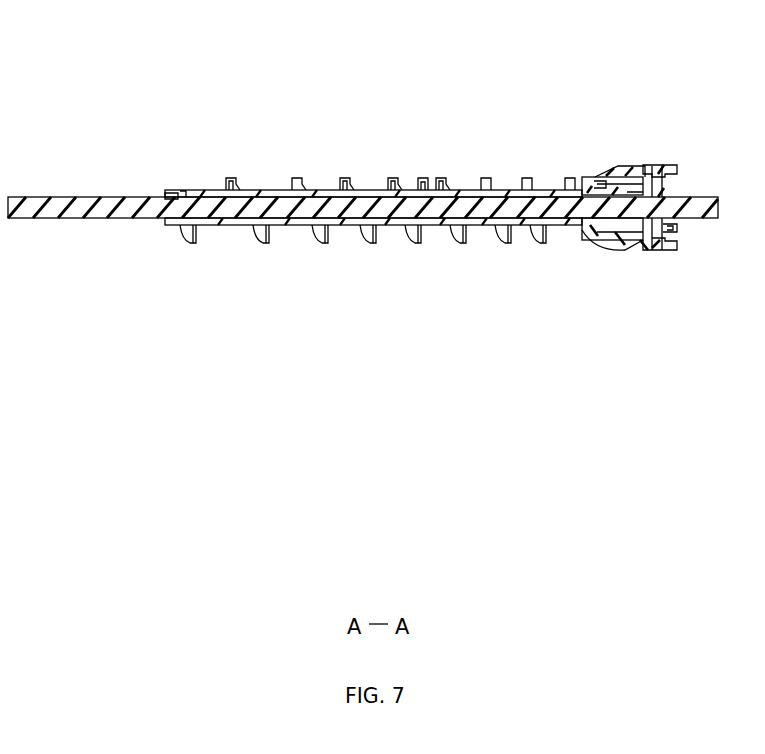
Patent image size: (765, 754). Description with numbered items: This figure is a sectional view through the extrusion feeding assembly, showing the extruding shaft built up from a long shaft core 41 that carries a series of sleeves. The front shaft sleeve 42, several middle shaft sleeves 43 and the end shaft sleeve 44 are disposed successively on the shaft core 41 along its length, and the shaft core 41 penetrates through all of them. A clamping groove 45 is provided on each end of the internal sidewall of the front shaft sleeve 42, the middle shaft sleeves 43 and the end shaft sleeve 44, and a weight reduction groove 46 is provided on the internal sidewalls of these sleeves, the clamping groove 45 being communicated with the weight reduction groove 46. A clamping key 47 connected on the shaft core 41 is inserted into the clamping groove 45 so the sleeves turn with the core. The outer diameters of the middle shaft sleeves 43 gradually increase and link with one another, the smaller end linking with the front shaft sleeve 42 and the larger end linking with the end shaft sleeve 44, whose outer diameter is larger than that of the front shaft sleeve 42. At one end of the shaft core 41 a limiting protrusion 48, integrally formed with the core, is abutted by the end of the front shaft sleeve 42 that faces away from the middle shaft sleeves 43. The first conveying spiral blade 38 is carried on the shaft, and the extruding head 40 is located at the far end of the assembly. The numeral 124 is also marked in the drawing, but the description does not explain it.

The first conveying spiral blade 38 is at (230, 177).
The extruding head 40 is at (623, 170).
The shaft core 41 is at (105, 208).
The front shaft sleeve 42 is at (212, 190).
The middle shaft sleeve 43 is at (382, 190).
The end shaft sleeve 44 is at (608, 177).
The clamping groove 45 is at (174, 198).
The weight reduction groove 46 is at (365, 193).
The clamping key 47 is at (473, 197).
The limiting protrusion 48 is at (158, 220).
The lower tab 124 is at (365, 238).